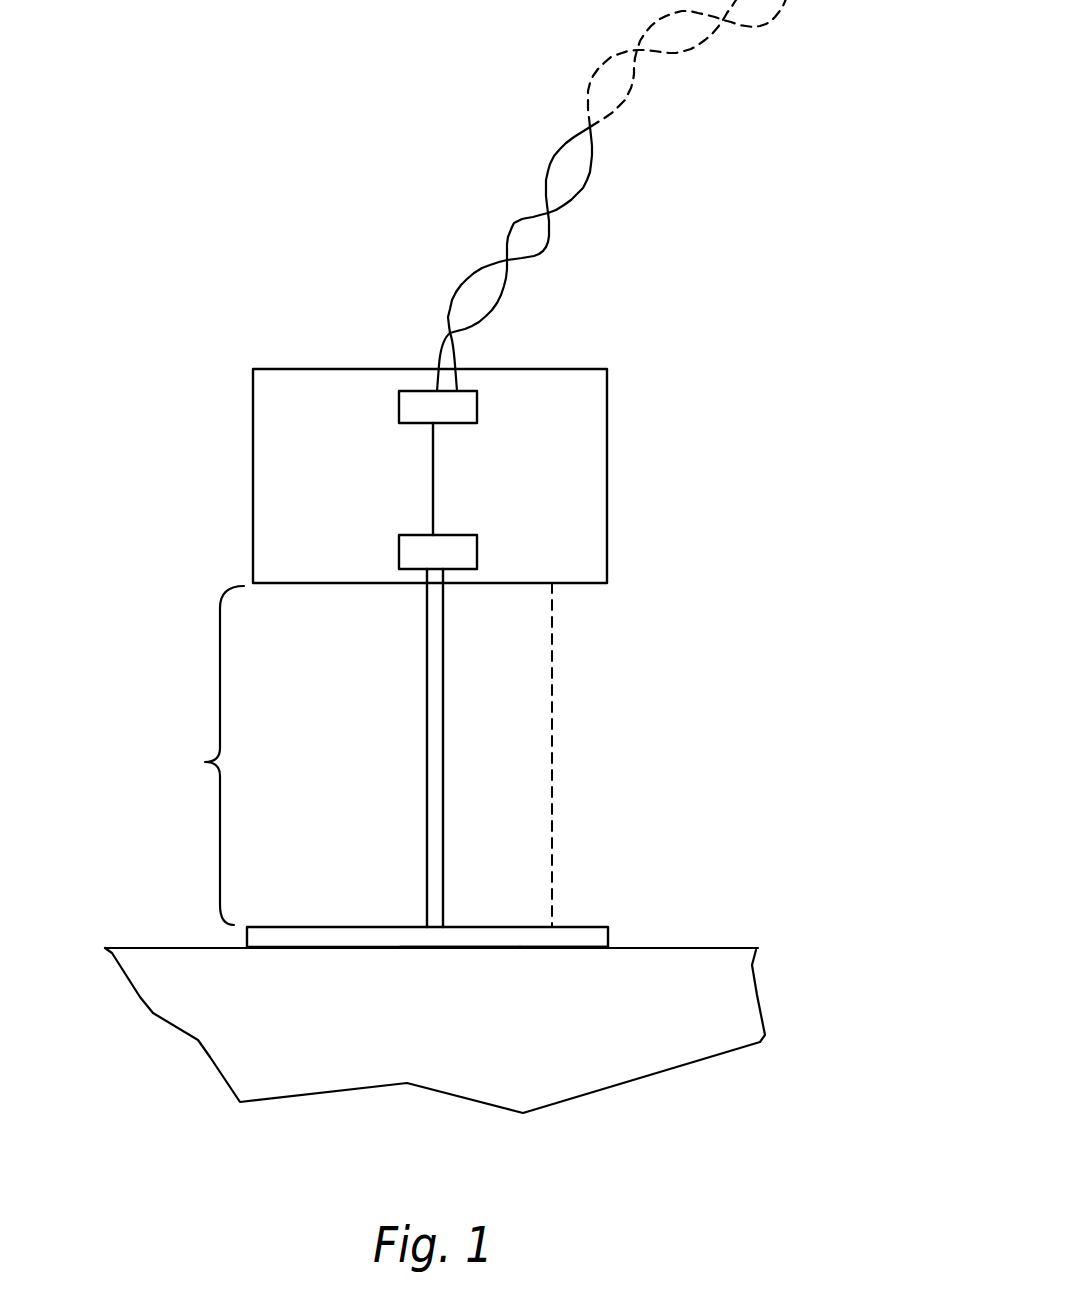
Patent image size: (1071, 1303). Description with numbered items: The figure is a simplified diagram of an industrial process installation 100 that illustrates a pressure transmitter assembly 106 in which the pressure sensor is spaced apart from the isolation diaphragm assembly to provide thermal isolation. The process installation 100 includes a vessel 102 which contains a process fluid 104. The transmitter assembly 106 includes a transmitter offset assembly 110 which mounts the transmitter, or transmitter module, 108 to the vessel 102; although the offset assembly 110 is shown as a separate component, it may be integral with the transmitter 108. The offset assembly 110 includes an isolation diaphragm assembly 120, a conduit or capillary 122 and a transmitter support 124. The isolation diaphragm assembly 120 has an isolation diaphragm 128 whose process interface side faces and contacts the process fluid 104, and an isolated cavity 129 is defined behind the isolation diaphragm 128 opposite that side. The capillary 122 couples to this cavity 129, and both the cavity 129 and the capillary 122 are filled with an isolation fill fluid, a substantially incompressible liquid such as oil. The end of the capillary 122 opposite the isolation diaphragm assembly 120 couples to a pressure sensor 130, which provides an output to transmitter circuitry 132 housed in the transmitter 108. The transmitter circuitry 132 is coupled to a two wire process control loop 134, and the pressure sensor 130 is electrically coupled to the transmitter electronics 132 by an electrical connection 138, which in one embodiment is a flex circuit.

The industrial process installation 100 is at (397, 272).
The vessel 102 is at (707, 948).
The process fluid 104 is at (655, 1017).
The pressure transmitter assembly 106 is at (162, 620).
The transmitter 108 is at (608, 385).
The transmitter offset assembly 110 is at (201, 755).
The isolation diaphragm assembly 120 is at (597, 925).
The conduit 122 is at (445, 752).
The transmitter support 124 is at (553, 683).
The isolation diaphragm 128 is at (565, 948).
The isolated cavity 129 is at (463, 938).
The pressure sensor 130 is at (455, 560).
The transmitter circuitry 132 is at (420, 391).
The two wire process control loop 134 is at (663, 55).
The electrical connection 138 is at (437, 446).